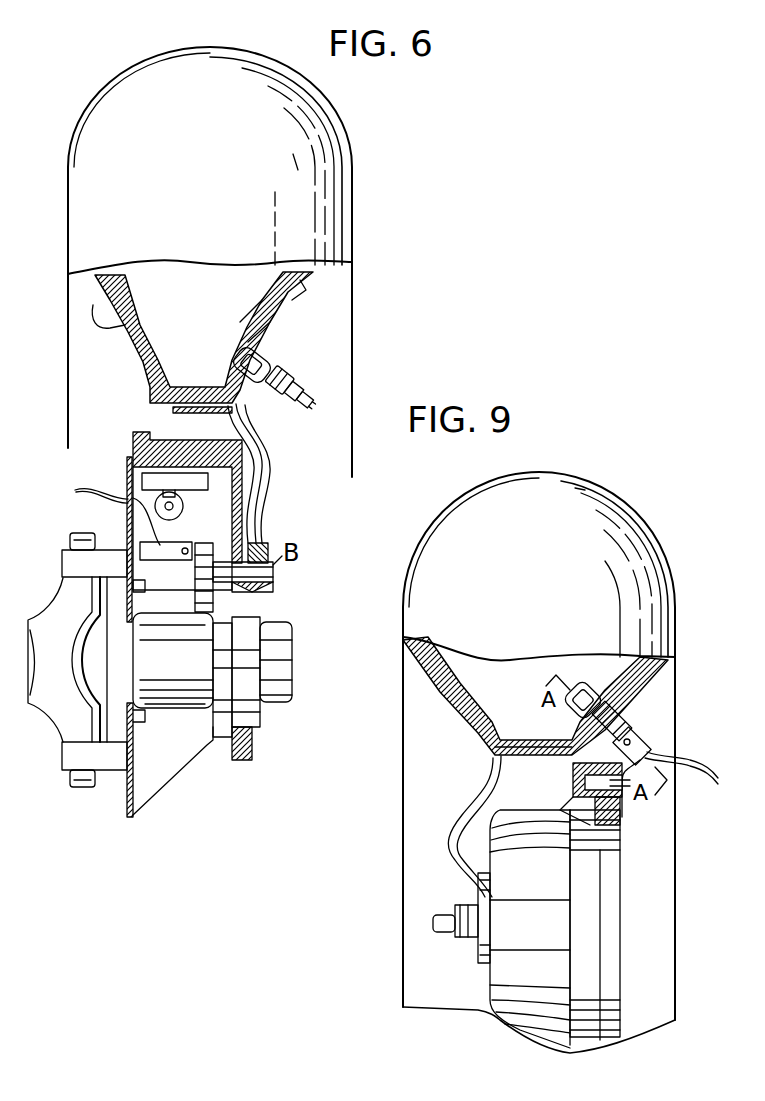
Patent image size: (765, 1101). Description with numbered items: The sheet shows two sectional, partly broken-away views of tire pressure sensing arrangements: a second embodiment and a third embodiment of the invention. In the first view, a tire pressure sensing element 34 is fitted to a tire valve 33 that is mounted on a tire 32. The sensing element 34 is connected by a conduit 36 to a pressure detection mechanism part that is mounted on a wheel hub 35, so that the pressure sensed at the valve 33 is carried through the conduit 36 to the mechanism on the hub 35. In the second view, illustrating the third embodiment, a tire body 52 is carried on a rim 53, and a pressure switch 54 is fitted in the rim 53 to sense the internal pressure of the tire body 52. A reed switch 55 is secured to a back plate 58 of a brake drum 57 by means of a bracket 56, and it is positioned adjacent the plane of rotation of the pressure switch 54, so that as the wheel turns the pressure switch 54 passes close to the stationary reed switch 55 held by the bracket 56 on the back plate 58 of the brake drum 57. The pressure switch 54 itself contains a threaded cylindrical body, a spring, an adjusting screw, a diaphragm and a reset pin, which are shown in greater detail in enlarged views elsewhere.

In FIG. 6, the tire 32 is at (356, 165).
In FIG. 6, the tire valve 33 is at (263, 366).
In FIG. 6, the tire pressure sensing element 34 is at (297, 393).
In FIG. 6, the wheel hub 35 is at (257, 655).
In FIG. 6, the conduit 36 is at (262, 532).
In FIG. 9, the tire body 52 is at (640, 521).
In FIG. 9, the rim 53 is at (462, 707).
In FIG. 9, the pressure switch 54 is at (628, 718).
In FIG. 9, the reed switch 55 is at (633, 731).
In FIG. 9, the bracket 56 is at (622, 803).
In FIG. 9, the brake drum 57 is at (509, 1033).
In FIG. 9, the back plate 58 is at (595, 903).